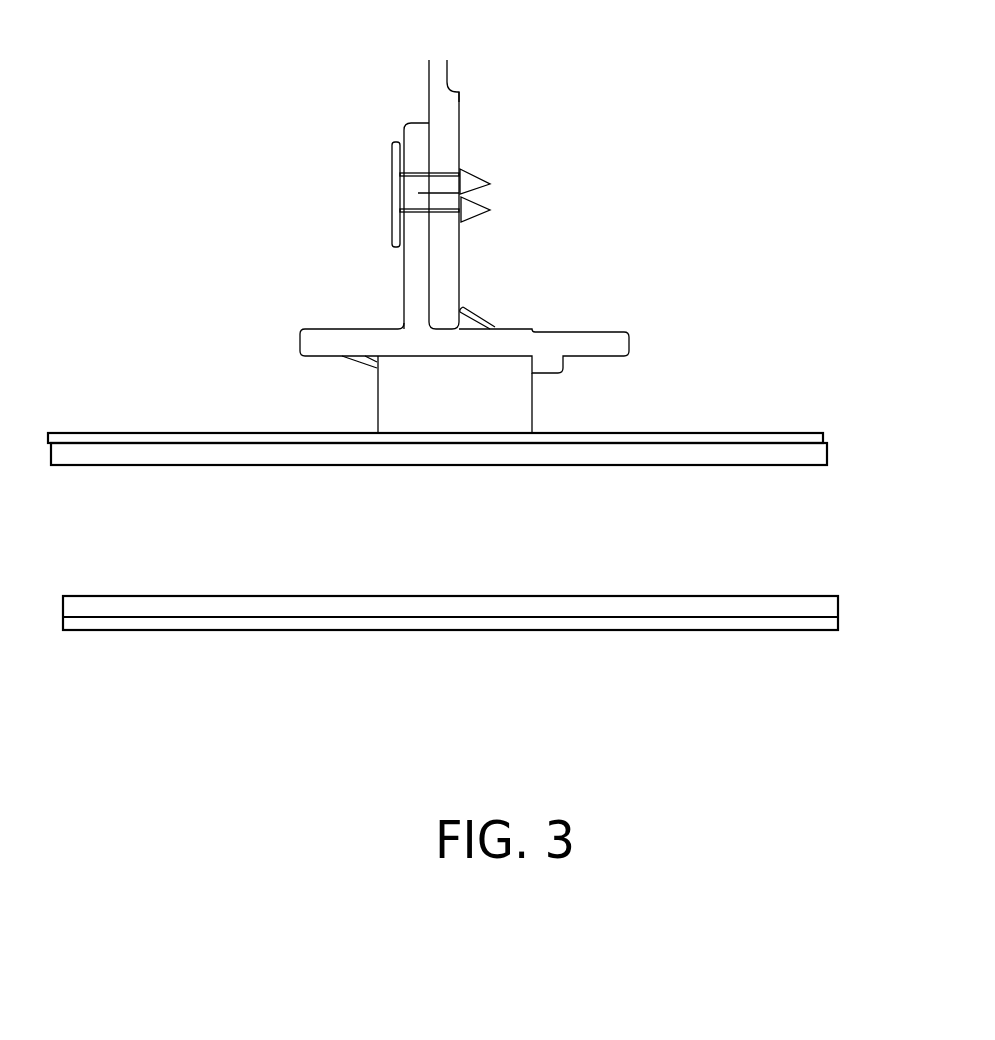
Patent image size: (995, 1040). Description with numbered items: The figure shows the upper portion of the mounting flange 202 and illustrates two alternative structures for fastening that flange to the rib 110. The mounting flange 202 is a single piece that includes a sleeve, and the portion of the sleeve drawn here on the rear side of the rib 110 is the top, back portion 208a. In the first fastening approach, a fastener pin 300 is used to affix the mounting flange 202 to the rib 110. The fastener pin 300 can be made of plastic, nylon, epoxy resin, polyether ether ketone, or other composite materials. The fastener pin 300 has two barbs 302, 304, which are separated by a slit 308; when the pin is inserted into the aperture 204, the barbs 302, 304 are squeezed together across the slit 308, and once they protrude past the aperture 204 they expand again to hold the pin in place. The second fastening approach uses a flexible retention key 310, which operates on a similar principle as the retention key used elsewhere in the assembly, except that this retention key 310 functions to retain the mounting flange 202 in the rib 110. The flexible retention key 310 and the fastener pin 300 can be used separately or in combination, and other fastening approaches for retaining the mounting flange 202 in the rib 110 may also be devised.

The rib 110 is at (459, 102).
The aperture 204 is at (440, 173).
The fastener pin 300 is at (392, 180).
The barb 302 is at (476, 172).
The barb 304 is at (475, 218).
The slit 308 is at (459, 193).
The flexible retention key 310 is at (478, 308).
The mounting flange 202 is at (404, 282).
The top, back portion of the sleeve 208a is at (572, 330).